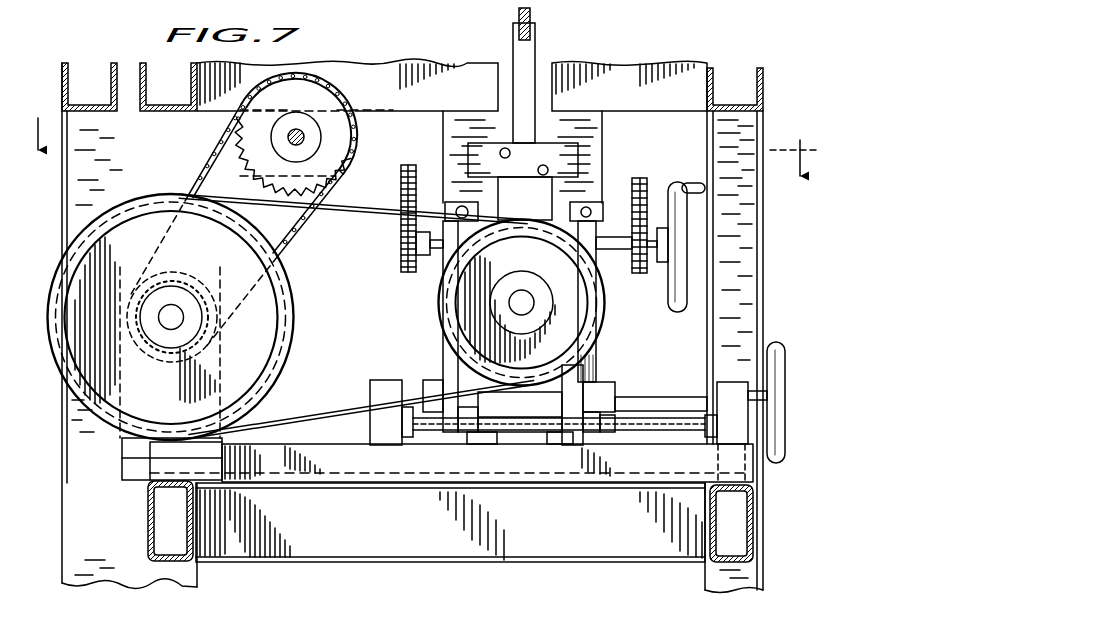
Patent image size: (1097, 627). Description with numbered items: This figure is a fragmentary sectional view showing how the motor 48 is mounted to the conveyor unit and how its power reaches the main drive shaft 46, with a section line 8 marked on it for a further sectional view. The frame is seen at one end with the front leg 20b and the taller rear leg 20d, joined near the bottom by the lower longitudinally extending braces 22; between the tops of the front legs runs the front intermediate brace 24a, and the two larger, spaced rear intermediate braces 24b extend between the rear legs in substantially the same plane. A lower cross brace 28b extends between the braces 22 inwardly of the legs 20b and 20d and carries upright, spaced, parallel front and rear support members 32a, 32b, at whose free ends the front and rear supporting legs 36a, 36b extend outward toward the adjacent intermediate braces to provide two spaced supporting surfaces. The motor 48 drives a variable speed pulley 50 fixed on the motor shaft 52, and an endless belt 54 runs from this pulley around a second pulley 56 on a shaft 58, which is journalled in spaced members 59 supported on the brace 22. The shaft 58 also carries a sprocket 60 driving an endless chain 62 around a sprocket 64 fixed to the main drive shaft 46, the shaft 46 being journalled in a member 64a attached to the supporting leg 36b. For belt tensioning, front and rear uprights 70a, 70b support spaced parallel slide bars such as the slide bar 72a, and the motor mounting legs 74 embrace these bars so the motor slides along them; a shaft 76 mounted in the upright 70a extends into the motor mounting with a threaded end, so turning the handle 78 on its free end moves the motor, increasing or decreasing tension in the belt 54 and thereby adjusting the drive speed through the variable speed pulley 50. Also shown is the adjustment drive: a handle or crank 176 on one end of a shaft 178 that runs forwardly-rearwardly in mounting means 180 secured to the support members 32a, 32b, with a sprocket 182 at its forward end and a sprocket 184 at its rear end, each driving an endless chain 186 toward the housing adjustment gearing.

The section line 8- 8 is at (423, 135).
The front leg 20b is at (763, 220).
The rear leg 20d is at (60, 213).
The lower longitudinally extending brace 22 is at (148, 530).
The front intermediate longitudinally extending brace 24a is at (767, 98).
The rear intermediate longitudinally extending braces 24b is at (90, 111).
The lower cross brace 28b is at (413, 537).
The front support member 32a is at (578, 135).
The rear support member 32b is at (475, 192).
The front supporting leg 36a is at (653, 47).
The rear supporting leg 36b is at (403, 68).
The main drive shaft 46 is at (301, 132).
The motor 48 is at (593, 357).
The pulley 50 is at (567, 323).
The motor shaft 52 is at (522, 300).
The endless belt 54 is at (310, 408).
The pulley 56 is at (258, 335).
The shaft 58 is at (168, 325).
The spaced members 59 is at (118, 447).
The sprocket 60 is at (188, 270).
The endless chain 62 is at (290, 245).
The sprocket 64 is at (252, 182).
The member 64a is at (338, 187).
The front upright 70a is at (728, 382).
The rear upright 70b is at (367, 422).
The slide bar 72a is at (657, 435).
The legs 74 is at (573, 435).
The shaft 76 is at (650, 397).
The handle 78 is at (778, 433).
The handle or crank 176 is at (687, 290).
The shaft 178 is at (625, 255).
The mounting means 180 is at (586, 208).
The sprocket 182 is at (653, 187).
The sprocket 184 is at (403, 250).
The endless chain 186 is at (407, 160).